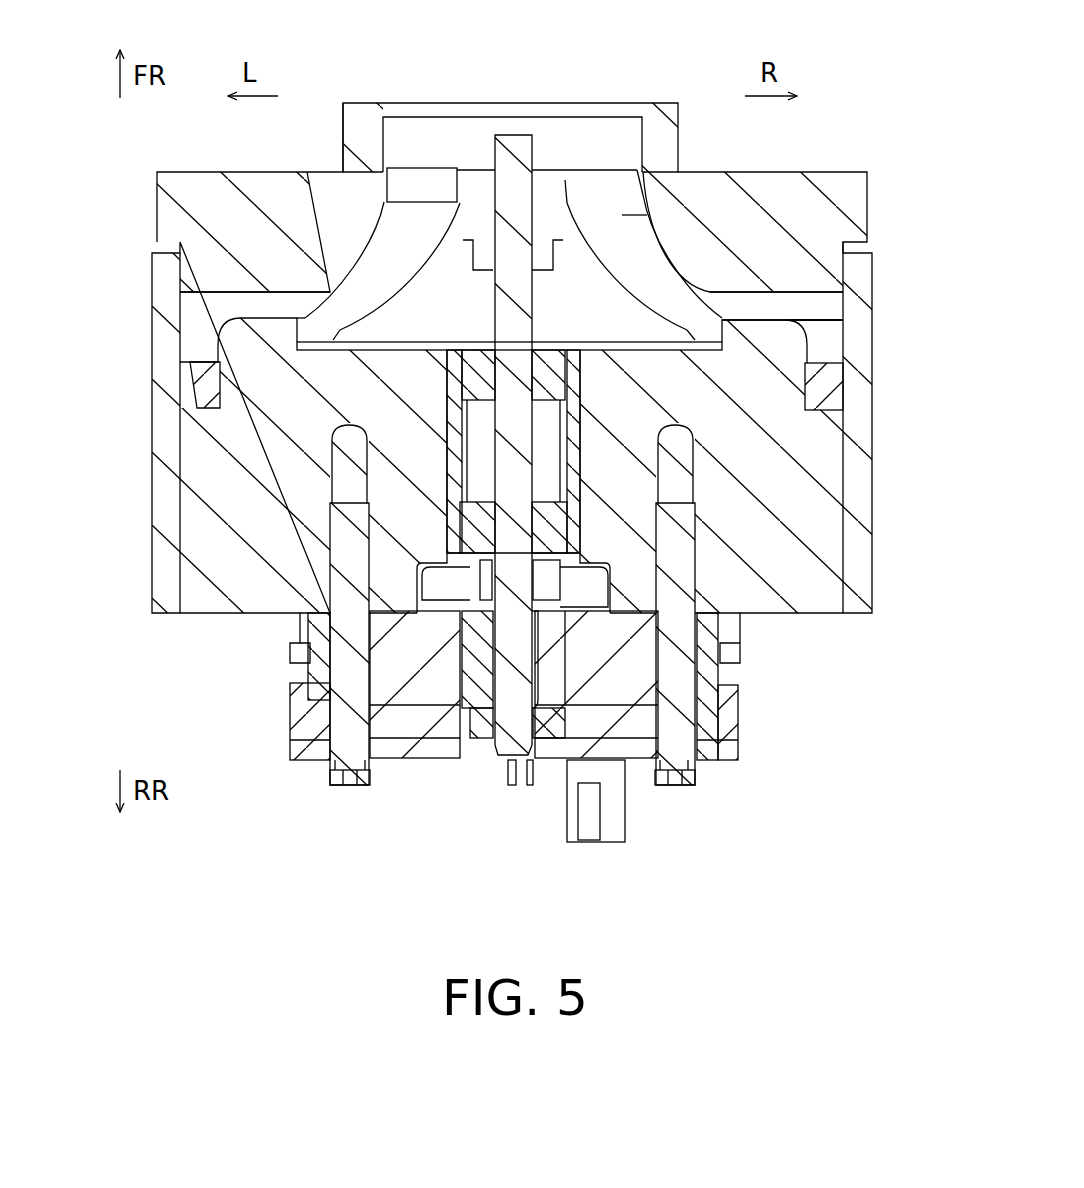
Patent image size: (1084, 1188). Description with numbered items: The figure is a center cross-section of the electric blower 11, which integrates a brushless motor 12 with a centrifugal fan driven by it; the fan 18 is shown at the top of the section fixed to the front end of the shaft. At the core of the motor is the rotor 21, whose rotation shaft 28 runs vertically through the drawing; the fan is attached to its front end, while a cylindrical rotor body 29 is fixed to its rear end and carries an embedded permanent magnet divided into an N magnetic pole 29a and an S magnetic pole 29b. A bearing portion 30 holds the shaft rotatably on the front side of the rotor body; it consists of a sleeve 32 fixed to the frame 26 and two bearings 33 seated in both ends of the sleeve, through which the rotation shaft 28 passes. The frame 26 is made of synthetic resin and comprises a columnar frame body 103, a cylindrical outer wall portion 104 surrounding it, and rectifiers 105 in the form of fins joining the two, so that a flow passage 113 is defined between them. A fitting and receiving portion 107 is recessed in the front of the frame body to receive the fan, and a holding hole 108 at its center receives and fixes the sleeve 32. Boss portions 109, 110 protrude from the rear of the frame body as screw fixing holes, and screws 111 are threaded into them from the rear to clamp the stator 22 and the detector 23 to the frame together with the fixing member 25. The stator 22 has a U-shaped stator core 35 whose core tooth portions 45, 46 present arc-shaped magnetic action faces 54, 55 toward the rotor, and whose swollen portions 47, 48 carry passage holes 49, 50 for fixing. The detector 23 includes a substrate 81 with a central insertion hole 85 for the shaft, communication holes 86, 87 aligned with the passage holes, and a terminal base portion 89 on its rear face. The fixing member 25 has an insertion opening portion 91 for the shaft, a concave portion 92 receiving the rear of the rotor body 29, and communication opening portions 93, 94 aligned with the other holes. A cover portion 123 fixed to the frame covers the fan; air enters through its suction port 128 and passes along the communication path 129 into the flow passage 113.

The electric blower 11 is at (513, 443).
The brushless motor 12 is at (450, 714).
The impeller 18 is at (604, 172).
The rotor 21 is at (688, 432).
The stator 22 is at (450, 714).
The detector 23 is at (740, 760).
The fixing member 25 is at (740, 728).
The frame 26 is at (513, 334).
The rotation shaft 28 is at (513, 133).
The rotor body 29 is at (450, 651).
The N magnetic pole 29a is at (345, 672).
The S magnetic pole 29b is at (690, 672).
The bearing portion 30 is at (582, 465).
The sleeve 32 is at (590, 517).
The bearing 33 is at (735, 322).
The stator core 35 is at (310, 625).
The one core tooth portion 45 is at (435, 690).
The other core tooth portion 46 is at (612, 690).
The swollen portion 47 is at (300, 637).
The swollen portion 48 is at (740, 627).
The passage hole 49 is at (300, 657).
The passage hole 50 is at (718, 650).
The magnetic action face 54 is at (496, 760).
The magnetic action face 55 is at (545, 705).
The substrate 81 is at (290, 748).
The insertion hole 85 is at (524, 775).
The communication hole 86 is at (330, 778).
The communication hole 87 is at (698, 780).
The terminal base portion 89 is at (590, 835).
The insertion opening portion 91 is at (510, 745).
The concave portion 92 is at (475, 690).
The communication opening portion 93 is at (340, 768).
The communication opening portion 94 is at (690, 775).
The frame body 103 is at (810, 440).
The outer wall portion 104 is at (866, 392).
The rectifier 105 is at (830, 385).
The fitting and receiving portion 107 is at (345, 355).
The holding hole 108 is at (456, 385).
The boss portion 109 is at (350, 525).
The boss portion 110 is at (700, 600).
The screw 111 is at (365, 770).
The flow passage 113 is at (183, 400).
The cover portion 123 is at (680, 133).
The suction port 128 is at (380, 110).
The communication path 129 is at (790, 300).